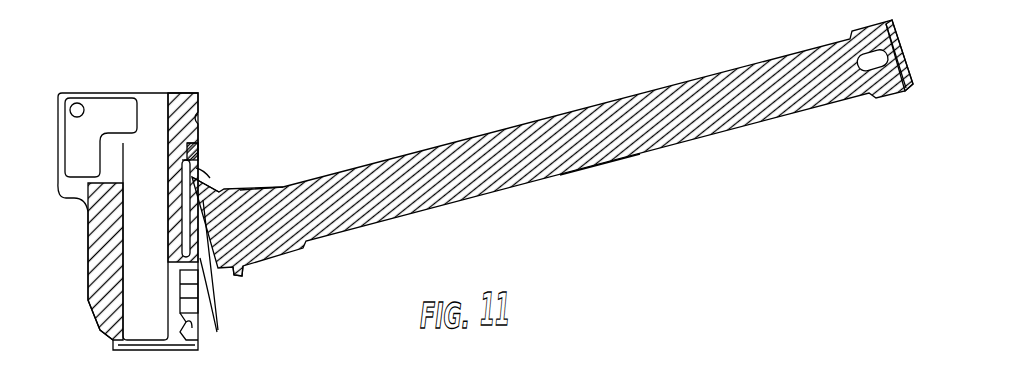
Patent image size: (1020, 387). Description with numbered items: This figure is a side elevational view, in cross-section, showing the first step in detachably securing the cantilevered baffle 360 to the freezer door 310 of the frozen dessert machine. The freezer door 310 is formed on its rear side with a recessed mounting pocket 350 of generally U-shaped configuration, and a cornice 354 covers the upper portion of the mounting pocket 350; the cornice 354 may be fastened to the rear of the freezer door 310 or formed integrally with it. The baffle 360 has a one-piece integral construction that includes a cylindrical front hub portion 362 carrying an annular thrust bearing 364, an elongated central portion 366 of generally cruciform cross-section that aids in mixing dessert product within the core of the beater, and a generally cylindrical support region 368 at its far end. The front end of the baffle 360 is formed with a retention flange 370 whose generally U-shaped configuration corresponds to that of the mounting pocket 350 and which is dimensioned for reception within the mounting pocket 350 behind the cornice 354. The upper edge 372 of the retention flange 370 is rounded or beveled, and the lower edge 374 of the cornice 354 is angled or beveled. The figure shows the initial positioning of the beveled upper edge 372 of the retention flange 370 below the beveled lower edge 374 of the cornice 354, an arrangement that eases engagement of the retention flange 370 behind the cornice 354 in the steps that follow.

The freezer door 310 is at (103, 93).
The recessed mounting pocket 350 is at (218, 330).
The cornice 354 is at (200, 178).
The baffle 360 is at (584, 97).
The cylindrical front hub portion 362 is at (267, 186).
The annular thrust bearing 364 is at (240, 277).
The elongated central portion 366 is at (596, 167).
The generally cylindrical support region 368 is at (891, 92).
The retention flange 370 is at (208, 182).
The upper edge of retention flange 372 is at (205, 172).
The lower edge of cornice 374 is at (183, 162).